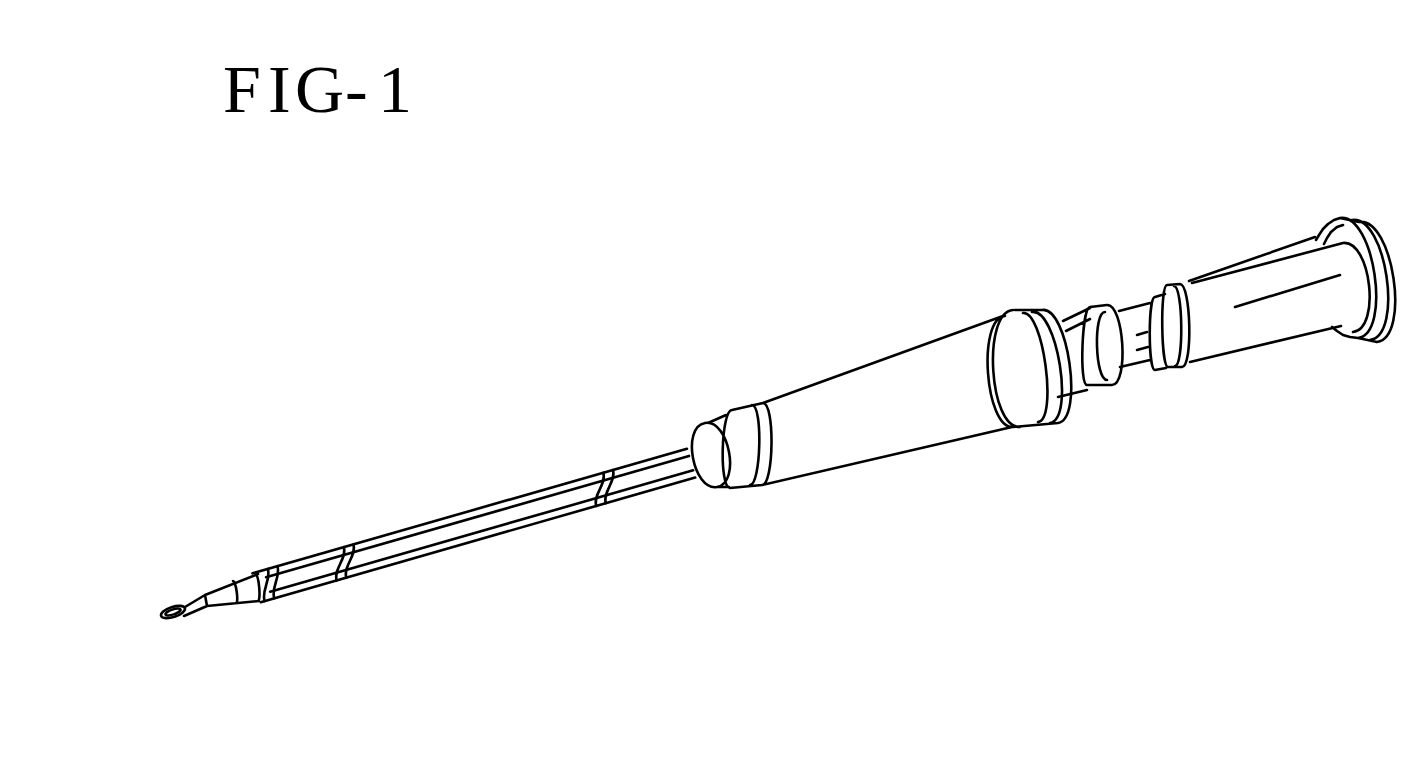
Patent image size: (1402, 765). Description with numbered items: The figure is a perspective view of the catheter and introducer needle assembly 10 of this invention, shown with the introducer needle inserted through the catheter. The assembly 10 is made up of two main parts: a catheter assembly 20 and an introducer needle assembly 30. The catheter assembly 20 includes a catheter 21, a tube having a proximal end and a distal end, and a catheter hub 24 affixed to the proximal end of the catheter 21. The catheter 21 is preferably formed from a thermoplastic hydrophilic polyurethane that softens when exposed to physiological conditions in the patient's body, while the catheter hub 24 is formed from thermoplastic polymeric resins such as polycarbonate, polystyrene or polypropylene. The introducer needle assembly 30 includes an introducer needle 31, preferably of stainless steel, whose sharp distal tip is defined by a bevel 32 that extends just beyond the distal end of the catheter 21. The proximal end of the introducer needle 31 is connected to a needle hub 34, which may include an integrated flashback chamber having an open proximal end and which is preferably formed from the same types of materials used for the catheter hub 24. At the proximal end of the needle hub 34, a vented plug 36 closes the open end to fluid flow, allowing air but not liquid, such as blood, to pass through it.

The catheter and introducer needle assembly 10 is at (822, 131).
The catheter assembly 20 is at (580, 384).
The catheter 21 is at (458, 512).
The catheter hub 24 is at (888, 445).
The introducer needle assembly 30 is at (1134, 233).
The introducer needle 31 is at (195, 610).
The bevel 32 is at (164, 603).
The needle hub 34 is at (1254, 327).
The vented plug 36 is at (1350, 218).